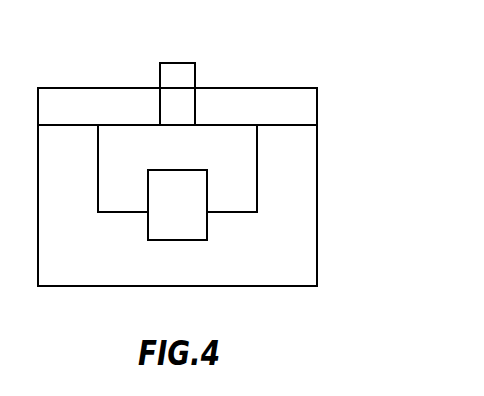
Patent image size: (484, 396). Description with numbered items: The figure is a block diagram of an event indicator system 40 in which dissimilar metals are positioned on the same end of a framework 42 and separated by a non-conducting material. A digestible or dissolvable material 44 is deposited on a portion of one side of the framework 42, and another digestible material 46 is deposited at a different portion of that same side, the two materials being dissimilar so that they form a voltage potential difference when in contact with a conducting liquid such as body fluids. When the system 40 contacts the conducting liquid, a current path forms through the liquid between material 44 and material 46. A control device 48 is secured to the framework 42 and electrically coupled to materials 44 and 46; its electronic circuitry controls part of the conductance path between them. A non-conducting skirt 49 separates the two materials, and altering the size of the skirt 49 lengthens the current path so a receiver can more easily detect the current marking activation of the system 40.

The system 40 is at (372, 77).
The framework 42 is at (279, 267).
The digestible or dissolvable material 44 is at (118, 118).
The digestible material 46 is at (267, 118).
The control device 48 is at (193, 217).
The non-conducting skirt 49 is at (195, 71).